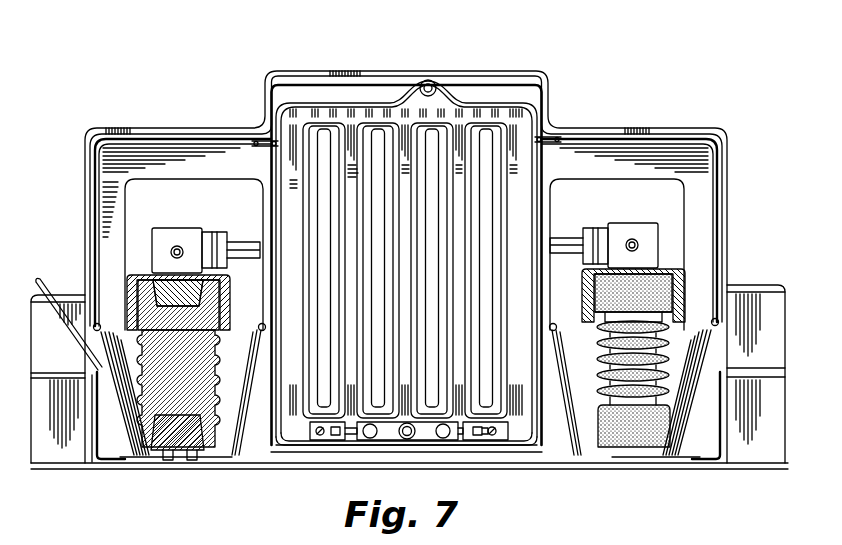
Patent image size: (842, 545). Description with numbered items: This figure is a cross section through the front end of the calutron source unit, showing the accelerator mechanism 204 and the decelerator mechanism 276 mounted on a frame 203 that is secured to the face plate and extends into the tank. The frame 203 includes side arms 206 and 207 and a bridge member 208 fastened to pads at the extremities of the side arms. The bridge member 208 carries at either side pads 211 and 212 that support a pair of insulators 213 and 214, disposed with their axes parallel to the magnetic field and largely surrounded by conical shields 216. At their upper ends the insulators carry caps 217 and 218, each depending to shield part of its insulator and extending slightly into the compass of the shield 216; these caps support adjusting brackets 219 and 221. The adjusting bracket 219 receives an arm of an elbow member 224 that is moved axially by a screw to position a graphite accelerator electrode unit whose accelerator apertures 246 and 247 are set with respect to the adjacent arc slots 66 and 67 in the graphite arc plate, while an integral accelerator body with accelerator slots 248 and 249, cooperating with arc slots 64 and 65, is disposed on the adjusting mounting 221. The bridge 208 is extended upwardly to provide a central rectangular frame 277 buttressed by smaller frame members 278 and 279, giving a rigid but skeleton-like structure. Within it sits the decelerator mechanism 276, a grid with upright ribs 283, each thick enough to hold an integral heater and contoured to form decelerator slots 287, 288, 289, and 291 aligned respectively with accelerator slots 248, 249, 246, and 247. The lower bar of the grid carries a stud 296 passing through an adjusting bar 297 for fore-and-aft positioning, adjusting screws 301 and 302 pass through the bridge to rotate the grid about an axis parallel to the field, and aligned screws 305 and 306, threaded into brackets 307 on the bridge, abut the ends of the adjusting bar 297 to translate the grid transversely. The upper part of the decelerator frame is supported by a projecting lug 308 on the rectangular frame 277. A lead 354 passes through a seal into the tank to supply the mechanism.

The frame 203 is at (82, 266).
The side arm 206 is at (42, 478).
The side arm 207 is at (749, 452).
The bridge member 208 is at (98, 481).
The pad 211 is at (222, 470).
The pad 212 is at (652, 463).
The insulator 213 is at (178, 450).
The insulator 214 is at (625, 440).
The conical shield 216 is at (124, 481).
The cap 217 is at (232, 302).
The cap 218 is at (686, 268).
The adjusting bracket 219 is at (172, 233).
The adjusting bracket 221 is at (631, 229).
The elbow member 224 is at (214, 232).
The accelerator aperture 246 is at (360, 122).
The accelerator aperture 247 is at (308, 122).
The accelerator slot 248 is at (500, 158).
The accelerator slot 249 is at (447, 112).
The decelerator mechanism 276 is at (548, 121).
The central rectangular frame 277 is at (549, 80).
The frame member 278 is at (171, 128).
The frame member 279 is at (676, 128).
The upright rib 283 is at (458, 226).
The decelerator slot 287 is at (476, 116).
The decelerator slot 288 is at (416, 102).
The decelerator slot 289 is at (354, 94).
The decelerator slot 291 is at (303, 132).
The stud 296 is at (408, 442).
The adjusting bar 297 is at (437, 436).
The adjusting screw 301 is at (461, 437).
The adjusting screw 302 is at (371, 439).
The adjusting screw 305 is at (480, 437).
The adjusting screw 306 is at (338, 437).
The bracket 307 is at (320, 437).
The projecting lug 308 is at (432, 80).
The lead 354 is at (78, 348).
The arc opening 64 is at (543, 103).
The arc opening 65 is at (470, 94).
The arc opening 66 is at (383, 122).
The arc opening 67 is at (324, 124).
The accelerator mechanism 204 is at (323, 94).